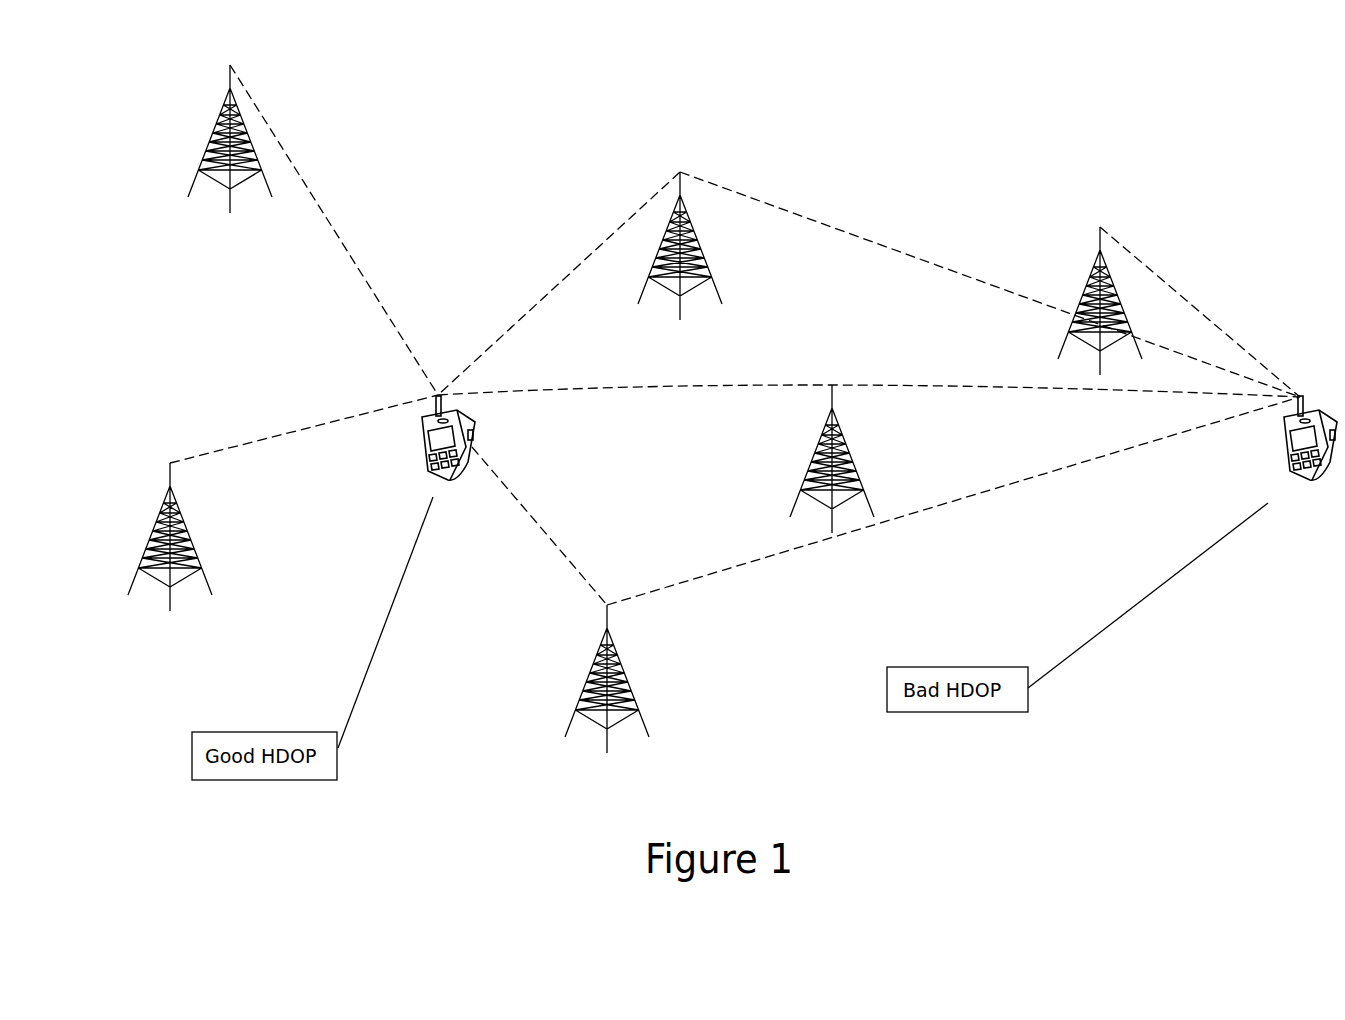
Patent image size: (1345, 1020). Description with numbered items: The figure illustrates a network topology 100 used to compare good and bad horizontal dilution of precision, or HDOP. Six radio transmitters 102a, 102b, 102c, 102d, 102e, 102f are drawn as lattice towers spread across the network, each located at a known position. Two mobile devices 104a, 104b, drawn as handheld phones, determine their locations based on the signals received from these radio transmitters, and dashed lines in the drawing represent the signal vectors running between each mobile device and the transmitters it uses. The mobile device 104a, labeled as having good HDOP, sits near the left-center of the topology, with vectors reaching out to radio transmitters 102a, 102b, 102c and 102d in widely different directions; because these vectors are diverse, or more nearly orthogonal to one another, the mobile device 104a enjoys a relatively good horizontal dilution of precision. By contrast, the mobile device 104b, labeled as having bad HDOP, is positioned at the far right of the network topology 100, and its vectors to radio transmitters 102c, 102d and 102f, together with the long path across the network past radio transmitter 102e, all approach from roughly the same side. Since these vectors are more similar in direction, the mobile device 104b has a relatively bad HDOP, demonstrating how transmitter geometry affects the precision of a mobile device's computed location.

The network topology 100 is at (1112, 70).
The radio transmitter 102a is at (239, 135).
The radio transmitter 102b is at (183, 537).
The radio transmitter 102c is at (683, 234).
The radio transmitter 102d is at (618, 679).
The radio transmitter 102e is at (844, 459).
The radio transmitter 102f is at (1102, 291).
The mobile device 104a is at (478, 438).
The mobile device 104b is at (1301, 448).